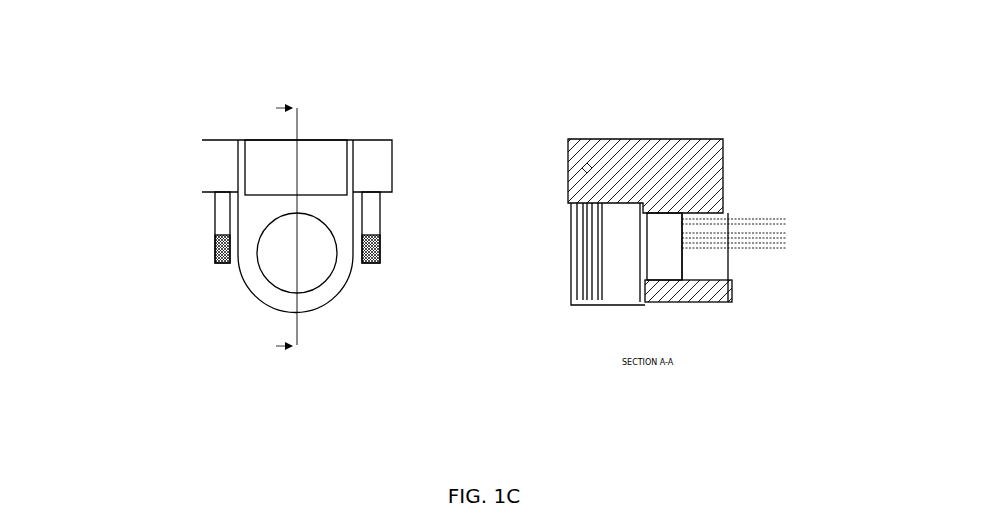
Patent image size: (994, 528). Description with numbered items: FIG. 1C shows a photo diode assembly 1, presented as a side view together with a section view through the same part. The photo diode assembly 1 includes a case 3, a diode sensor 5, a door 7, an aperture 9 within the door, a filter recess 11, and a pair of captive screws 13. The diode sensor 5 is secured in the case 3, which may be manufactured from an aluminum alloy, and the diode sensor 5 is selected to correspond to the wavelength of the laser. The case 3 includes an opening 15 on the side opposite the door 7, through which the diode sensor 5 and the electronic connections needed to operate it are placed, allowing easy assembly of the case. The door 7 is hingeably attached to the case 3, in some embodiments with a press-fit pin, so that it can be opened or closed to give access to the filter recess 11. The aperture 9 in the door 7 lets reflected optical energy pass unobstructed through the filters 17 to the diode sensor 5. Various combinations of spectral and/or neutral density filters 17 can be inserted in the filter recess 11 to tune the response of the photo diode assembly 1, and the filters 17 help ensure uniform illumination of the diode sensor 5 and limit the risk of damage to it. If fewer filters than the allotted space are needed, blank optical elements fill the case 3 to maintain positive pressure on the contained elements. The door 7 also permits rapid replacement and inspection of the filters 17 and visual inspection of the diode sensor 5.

The photo diode assembly 1 is at (535, 151).
The case 3 is at (320, 175).
The diode sensor 5 is at (650, 258).
The door 7 is at (330, 296).
The aperture 9 is at (320, 264).
The filter recess 11 is at (605, 202).
The captive screws 13 is at (217, 218).
The opening 15 is at (727, 210).
The filters 17 is at (587, 303).